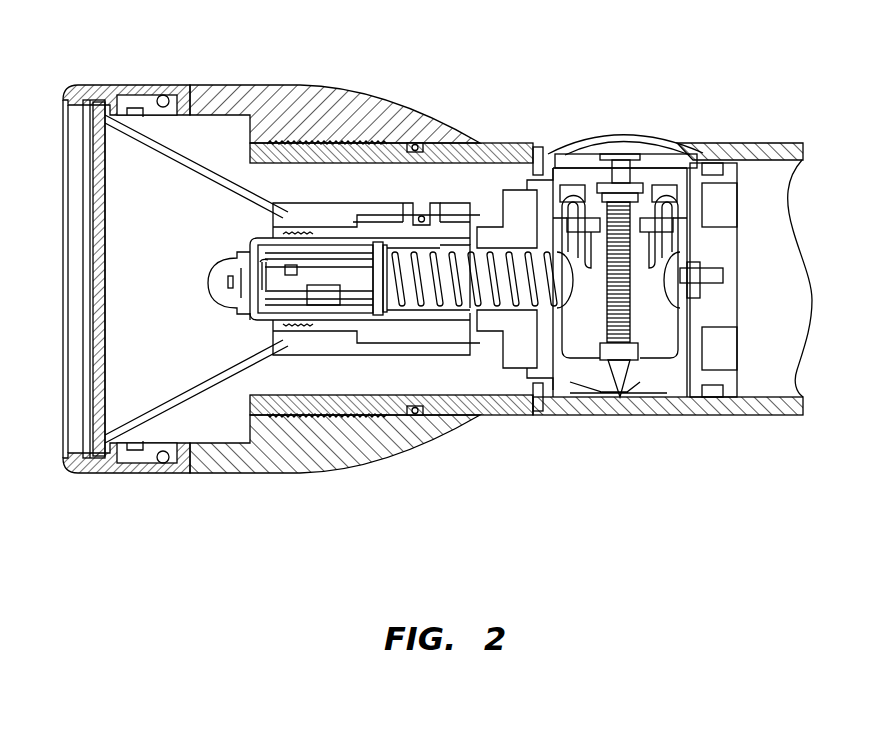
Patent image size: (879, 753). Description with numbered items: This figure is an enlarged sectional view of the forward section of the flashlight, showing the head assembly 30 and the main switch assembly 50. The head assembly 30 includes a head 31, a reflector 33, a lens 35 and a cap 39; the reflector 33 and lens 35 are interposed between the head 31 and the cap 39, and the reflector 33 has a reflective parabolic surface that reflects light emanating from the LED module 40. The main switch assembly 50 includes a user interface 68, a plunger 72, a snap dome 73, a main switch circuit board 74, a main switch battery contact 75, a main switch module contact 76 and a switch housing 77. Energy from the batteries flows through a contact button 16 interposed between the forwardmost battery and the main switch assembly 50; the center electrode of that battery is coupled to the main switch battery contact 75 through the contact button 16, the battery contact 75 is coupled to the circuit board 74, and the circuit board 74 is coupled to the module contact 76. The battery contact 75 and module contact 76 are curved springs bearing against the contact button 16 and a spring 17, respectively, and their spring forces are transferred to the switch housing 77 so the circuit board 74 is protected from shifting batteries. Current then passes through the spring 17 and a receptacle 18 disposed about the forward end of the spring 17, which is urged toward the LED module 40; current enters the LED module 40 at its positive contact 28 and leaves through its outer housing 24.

The contact button 16 is at (707, 267).
The spring 17 is at (477, 240).
The receptacle 18 is at (424, 220).
The outer housing 24 is at (325, 332).
The positive contact 28 is at (385, 254).
The head assembly 30 is at (208, 80).
The head 31 is at (268, 84).
The reflector 33 is at (204, 402).
The lens 35 is at (108, 348).
The cap 39 is at (140, 474).
The LED module 40 is at (320, 222).
The main switch assembly 50 is at (615, 125).
The user interface 68 is at (598, 160).
The plunger 72 is at (650, 140).
The snap dome 73 is at (676, 148).
The main switch circuit board 74 is at (718, 143).
The main switch battery contact 75 is at (683, 330).
The main switch module contact 76 is at (563, 397).
The switch housing 77 is at (648, 330).